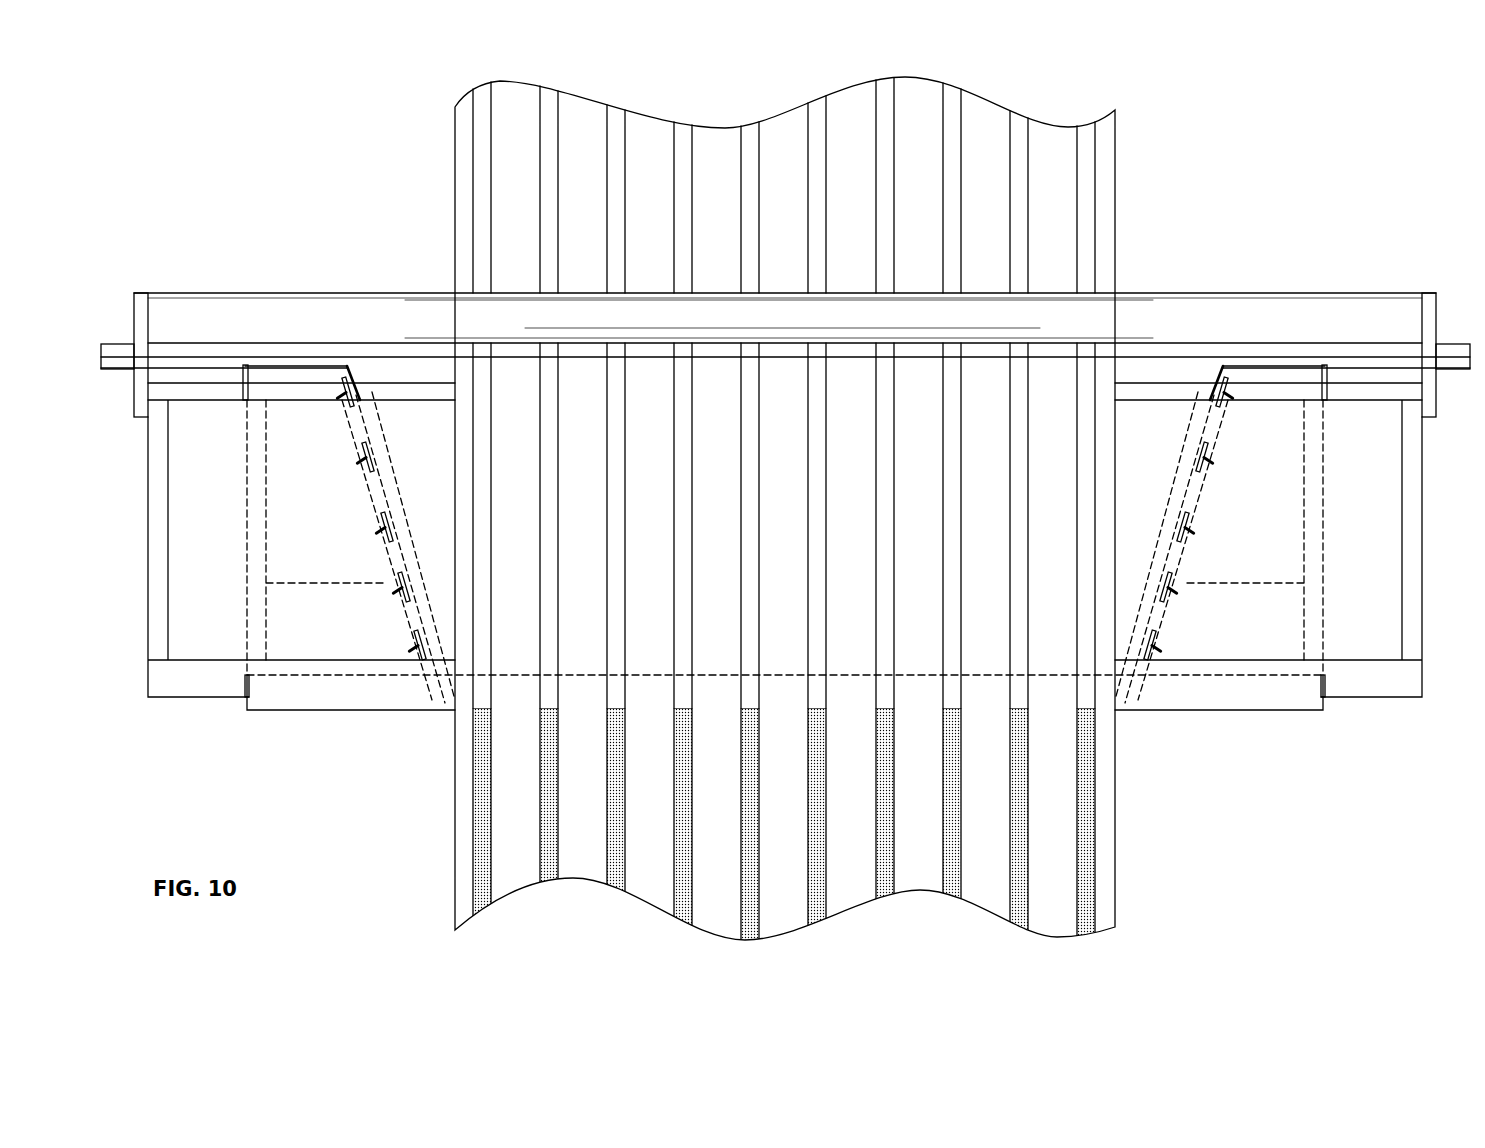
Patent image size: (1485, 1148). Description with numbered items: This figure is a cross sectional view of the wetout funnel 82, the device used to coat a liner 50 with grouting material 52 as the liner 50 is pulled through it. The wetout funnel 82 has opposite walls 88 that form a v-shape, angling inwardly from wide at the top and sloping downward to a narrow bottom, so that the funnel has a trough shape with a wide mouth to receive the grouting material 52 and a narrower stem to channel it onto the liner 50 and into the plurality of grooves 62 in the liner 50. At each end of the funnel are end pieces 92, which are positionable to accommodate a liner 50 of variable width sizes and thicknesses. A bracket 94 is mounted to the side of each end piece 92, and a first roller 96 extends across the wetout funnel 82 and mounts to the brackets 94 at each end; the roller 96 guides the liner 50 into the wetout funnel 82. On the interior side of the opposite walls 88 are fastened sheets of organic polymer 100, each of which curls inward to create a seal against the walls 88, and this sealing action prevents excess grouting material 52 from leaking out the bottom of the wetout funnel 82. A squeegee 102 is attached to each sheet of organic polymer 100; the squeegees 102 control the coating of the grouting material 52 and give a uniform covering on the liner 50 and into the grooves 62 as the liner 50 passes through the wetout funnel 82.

The liner 50 is at (1102, 165).
The grouting material 52 is at (950, 892).
The grooves 62 is at (481, 83).
The wetout funnel 82 is at (1287, 242).
The opposite walls 88 is at (378, 540).
The end pieces 92 is at (158, 577).
The bracket 94 is at (135, 393).
The first roller 96 is at (222, 318).
The sheets of organic polymer 100 is at (408, 615).
The squeegee 102 is at (438, 692).